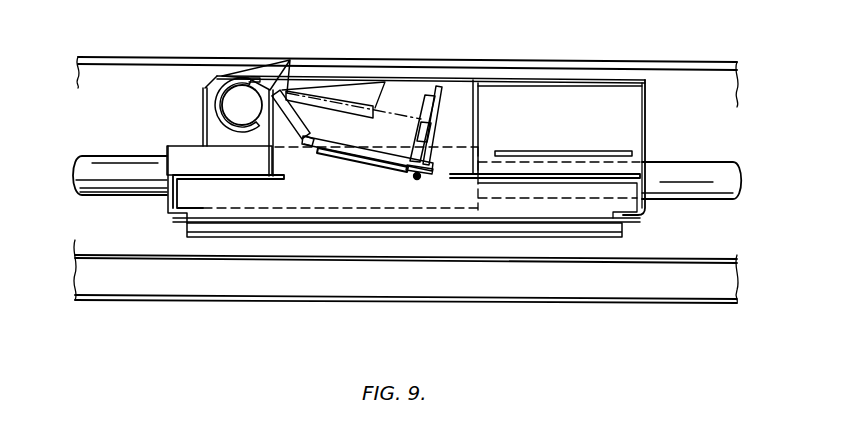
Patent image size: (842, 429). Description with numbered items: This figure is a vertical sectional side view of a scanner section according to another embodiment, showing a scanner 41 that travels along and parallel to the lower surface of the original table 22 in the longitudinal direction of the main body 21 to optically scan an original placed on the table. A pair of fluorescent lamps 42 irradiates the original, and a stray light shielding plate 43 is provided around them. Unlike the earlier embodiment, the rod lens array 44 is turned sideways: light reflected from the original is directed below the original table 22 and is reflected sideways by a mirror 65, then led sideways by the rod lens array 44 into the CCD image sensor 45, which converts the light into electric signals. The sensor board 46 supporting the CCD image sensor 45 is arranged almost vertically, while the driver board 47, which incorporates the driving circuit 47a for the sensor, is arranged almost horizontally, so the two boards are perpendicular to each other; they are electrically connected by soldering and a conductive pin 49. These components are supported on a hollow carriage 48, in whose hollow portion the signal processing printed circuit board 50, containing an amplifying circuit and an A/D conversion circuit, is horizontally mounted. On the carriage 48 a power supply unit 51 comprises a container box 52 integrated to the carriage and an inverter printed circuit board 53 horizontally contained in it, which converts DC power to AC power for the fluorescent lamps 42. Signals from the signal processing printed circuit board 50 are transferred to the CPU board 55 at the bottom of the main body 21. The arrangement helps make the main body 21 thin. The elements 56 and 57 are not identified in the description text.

The main body 21 is at (208, 302).
The original table 22 is at (545, 60).
The scanner 41 is at (408, 240).
The fluorescent lamps 42 is at (232, 105).
The stray light shielding plate 43 is at (215, 77).
The rod lens array 44 is at (345, 100).
The CCD image sensor 45 is at (424, 118).
The sensor board 46 is at (438, 97).
The driver board 47 is at (340, 157).
The driving circuit 47a is at (377, 173).
The carriage 48 is at (167, 210).
The conductive pin 49 is at (415, 174).
The signal processing printed circuit board 50 is at (552, 223).
The power supply unit 51 is at (645, 104).
The container box 52 is at (605, 78).
The inverter printed circuit board 53 is at (548, 151).
The CPU board 55 is at (653, 263).
The block 56 is at (167, 146).
The tube 57 is at (88, 156).
The mirror 65 is at (289, 128).